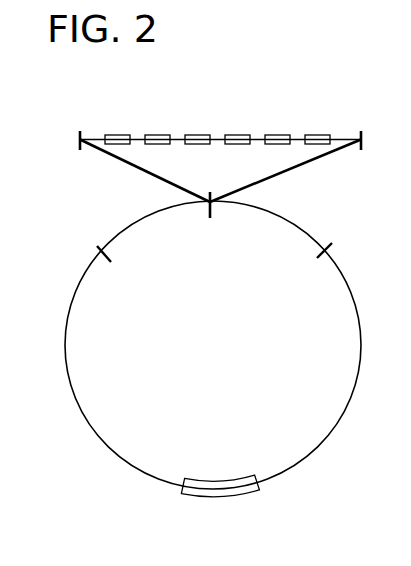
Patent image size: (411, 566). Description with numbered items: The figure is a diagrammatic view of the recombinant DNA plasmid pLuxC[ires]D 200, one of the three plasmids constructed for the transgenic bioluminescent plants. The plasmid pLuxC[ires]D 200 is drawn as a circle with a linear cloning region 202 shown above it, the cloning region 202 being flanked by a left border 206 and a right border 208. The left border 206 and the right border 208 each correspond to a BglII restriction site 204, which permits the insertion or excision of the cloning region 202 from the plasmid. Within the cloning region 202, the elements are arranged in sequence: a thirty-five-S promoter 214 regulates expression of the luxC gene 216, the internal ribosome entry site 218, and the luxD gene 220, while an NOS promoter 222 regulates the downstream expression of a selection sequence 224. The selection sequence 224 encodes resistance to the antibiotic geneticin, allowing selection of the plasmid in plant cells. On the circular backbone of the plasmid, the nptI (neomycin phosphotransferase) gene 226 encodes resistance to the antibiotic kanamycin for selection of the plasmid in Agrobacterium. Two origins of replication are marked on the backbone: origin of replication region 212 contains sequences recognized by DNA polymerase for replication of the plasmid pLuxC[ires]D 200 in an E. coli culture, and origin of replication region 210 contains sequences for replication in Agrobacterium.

The plasmid pLuxC[ires]D 200 is at (92, 433).
The cloning region 202 is at (189, 92).
The BglII restriction site 204 is at (205, 204).
The left border 206 is at (78, 138).
The right border 208 is at (363, 138).
The origin of replication region 210 is at (101, 257).
The origin of replication region 212 is at (325, 258).
The 35S promoter 214 is at (308, 133).
The luxC gene 216 is at (273, 133).
The internal ribosome entry site 218 is at (240, 133).
The luxD gene 220 is at (194, 133).
The NOS promoter 222 is at (163, 133).
The selection sequence 224 is at (121, 133).
The nptI gene 226 is at (222, 497).